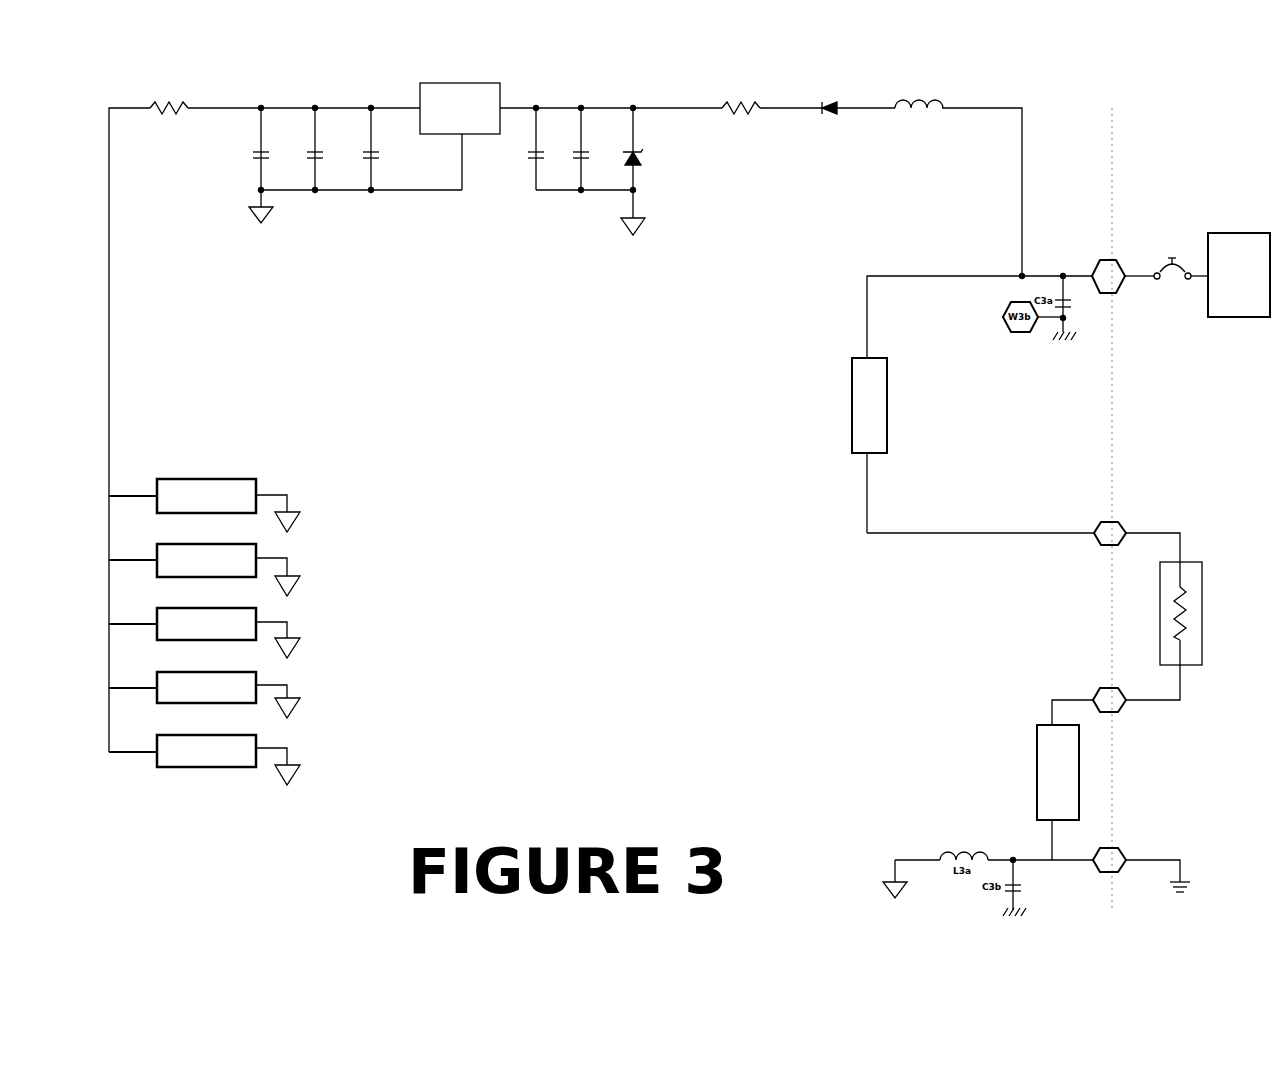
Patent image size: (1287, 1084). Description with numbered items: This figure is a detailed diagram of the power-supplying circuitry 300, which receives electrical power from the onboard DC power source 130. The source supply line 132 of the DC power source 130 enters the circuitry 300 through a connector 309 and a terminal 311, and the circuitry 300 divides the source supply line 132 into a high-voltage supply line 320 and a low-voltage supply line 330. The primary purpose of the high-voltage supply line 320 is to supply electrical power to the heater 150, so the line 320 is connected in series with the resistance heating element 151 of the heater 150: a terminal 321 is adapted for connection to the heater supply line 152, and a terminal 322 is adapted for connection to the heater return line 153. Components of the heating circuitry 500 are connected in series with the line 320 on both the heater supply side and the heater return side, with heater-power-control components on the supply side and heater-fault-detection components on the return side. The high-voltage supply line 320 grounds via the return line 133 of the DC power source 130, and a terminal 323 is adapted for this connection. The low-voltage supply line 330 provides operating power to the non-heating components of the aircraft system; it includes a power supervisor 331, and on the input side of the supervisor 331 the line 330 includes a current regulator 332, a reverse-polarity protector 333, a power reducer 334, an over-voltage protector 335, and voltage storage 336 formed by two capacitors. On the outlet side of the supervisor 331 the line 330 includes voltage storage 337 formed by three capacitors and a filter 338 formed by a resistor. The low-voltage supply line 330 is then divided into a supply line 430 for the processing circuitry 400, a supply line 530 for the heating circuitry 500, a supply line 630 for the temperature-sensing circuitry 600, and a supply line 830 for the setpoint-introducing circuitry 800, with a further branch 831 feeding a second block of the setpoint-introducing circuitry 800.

The power-supplying circuitry 300 is at (645, 317).
The onboard DC power source 130 is at (1239, 275).
The source supply line 132 is at (1198, 268).
The return line of the DC power source 133 is at (1149, 846).
The heater 150 is at (1199, 613).
The resistance heating element 151 is at (1158, 613).
The heater supply line 152 is at (1153, 540).
The heater return line 153 is at (1153, 684).
The connector 309 is at (1158, 259).
The terminal 311 is at (1109, 265).
The high-voltage supply line 320 is at (932, 276).
The terminal 321 is at (1107, 524).
The terminal 322 is at (1107, 690).
The terminal 323 is at (1106, 875).
The low-voltage supply line 330 is at (115, 110).
The power supervisor 331 is at (460, 100).
The current regulator 332 is at (915, 102).
The reverse-polarity protector 333 is at (822, 104).
The power reducer 334 is at (738, 105).
The over-voltage protector 335 is at (644, 171).
The voltage storage 336 is at (565, 134).
The voltage storage 337 is at (355, 146).
The filter 338 is at (167, 104).
The processing circuitry 400 is at (206, 496).
The supply line for the processing circuitry 430 is at (133, 486).
The heating circuitry 500 is at (620, 589).
The supply line for the heating circuitry 530 is at (133, 549).
The temperature-sensing circuitry 600 is at (206, 624).
The supply line for the temperature-sensing circuitry 630 is at (133, 613).
The setpoint-introducing circuitry 800 is at (206, 719).
The supply line for the setpoint-introducing circuitry 830 is at (133, 677).
The power line to second module 800 831 is at (133, 741).